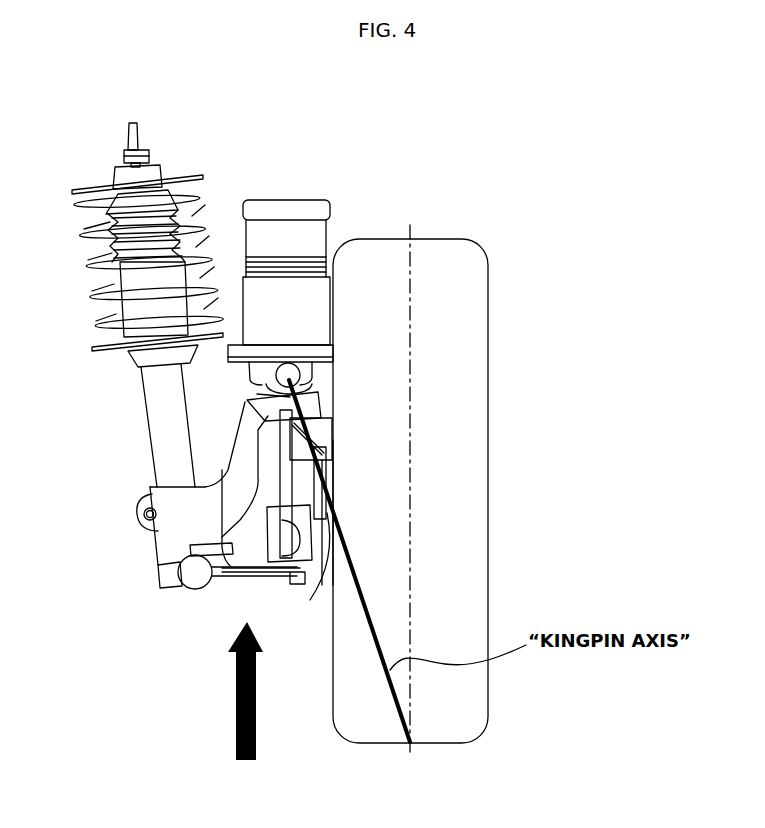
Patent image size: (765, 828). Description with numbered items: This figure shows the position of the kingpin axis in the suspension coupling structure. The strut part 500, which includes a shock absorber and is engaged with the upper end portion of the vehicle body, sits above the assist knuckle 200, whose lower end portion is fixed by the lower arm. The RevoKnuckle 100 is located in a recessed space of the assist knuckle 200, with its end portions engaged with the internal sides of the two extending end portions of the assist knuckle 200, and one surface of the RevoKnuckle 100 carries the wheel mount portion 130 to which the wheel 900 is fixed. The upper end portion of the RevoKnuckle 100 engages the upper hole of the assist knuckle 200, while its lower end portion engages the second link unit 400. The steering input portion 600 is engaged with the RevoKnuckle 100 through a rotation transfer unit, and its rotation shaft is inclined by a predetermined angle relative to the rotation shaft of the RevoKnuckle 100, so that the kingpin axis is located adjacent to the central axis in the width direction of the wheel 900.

The RevoKnuckle 100 is at (323, 572).
The wheel mount portion 130 is at (340, 465).
The assist knuckle 200 is at (160, 537).
The second link unit 400 is at (233, 575).
The strut part 500 is at (153, 165).
The steering input portion 600 is at (288, 208).
The wheel 900 is at (460, 547).